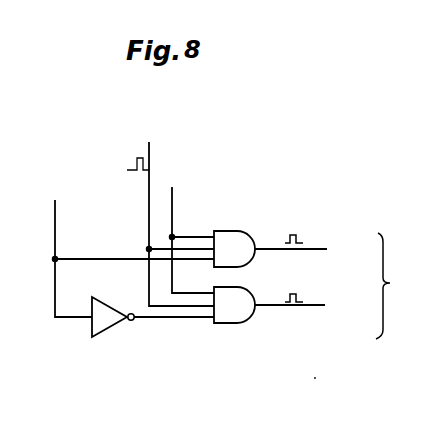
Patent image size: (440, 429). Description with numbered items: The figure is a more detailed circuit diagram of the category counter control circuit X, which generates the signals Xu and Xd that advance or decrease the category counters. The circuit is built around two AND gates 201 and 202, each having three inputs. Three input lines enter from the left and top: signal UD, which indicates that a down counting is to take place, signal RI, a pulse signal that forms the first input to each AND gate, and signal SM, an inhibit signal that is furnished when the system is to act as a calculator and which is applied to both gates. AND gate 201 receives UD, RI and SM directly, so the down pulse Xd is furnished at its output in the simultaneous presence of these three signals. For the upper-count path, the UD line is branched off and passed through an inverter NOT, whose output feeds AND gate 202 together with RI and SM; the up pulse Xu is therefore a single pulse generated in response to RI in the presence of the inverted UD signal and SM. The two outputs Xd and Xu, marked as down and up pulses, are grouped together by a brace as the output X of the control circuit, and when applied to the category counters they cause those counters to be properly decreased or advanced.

The AND gate 201 is at (232, 237).
The AND gate 202 is at (232, 313).
The signal R1 RI is at (170, 209).
The signal SM is at (190, 162).
The signal UD is at (76, 192).
The inverter NOT is at (104, 333).
The signal Xd is at (311, 245).
The signal Xu is at (304, 305).
The category counter control circuit X is at (414, 295).